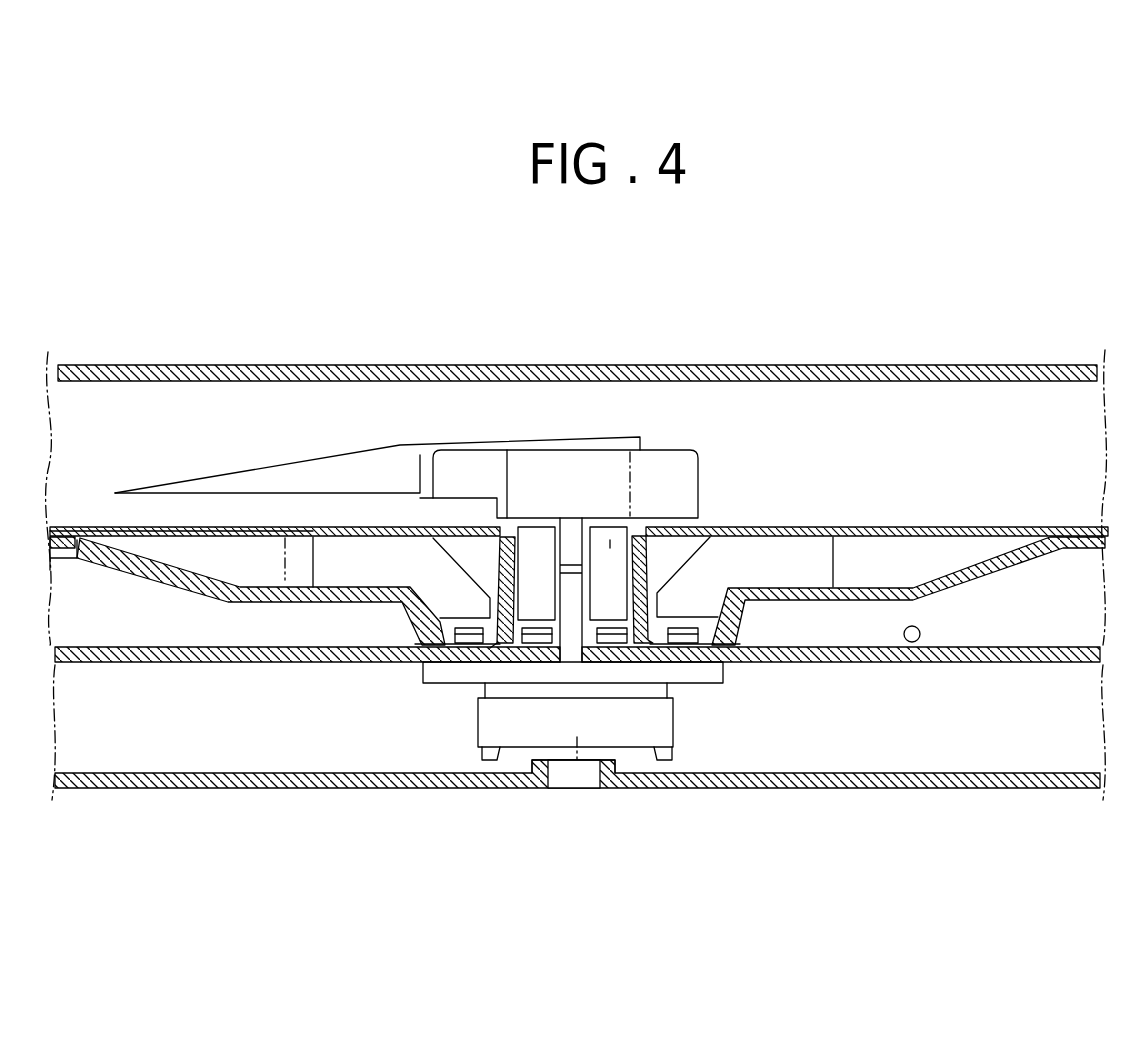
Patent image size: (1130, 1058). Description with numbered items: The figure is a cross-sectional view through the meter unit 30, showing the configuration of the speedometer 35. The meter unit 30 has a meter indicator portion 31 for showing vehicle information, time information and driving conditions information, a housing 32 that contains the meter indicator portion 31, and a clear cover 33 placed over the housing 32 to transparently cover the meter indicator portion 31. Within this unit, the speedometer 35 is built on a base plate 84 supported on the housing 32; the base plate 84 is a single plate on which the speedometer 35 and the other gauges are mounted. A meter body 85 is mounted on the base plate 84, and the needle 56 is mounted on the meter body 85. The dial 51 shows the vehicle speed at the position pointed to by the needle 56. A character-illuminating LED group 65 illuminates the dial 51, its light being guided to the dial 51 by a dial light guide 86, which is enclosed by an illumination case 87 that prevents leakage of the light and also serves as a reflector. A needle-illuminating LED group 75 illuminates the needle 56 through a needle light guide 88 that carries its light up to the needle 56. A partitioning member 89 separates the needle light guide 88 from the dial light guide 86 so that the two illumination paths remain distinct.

The meter unit 30 is at (128, 130).
The speedometer 35 is at (168, 305).
The clear cover 33 is at (895, 362).
The meter indicator portion 31 is at (957, 505).
The needle 56 is at (362, 443).
The needle light guide 88 is at (613, 510).
The partitioning member 89 is at (647, 563).
The dial light guide 86 is at (760, 547).
The illumination case 87 is at (280, 528).
The dial 51 is at (893, 527).
The character-illuminating LED group 65 is at (463, 665).
The needle-illuminating LED group 75 is at (530, 653).
The meter body 85 is at (573, 790).
The base plate 84 is at (920, 645).
The housing 32 is at (975, 790).